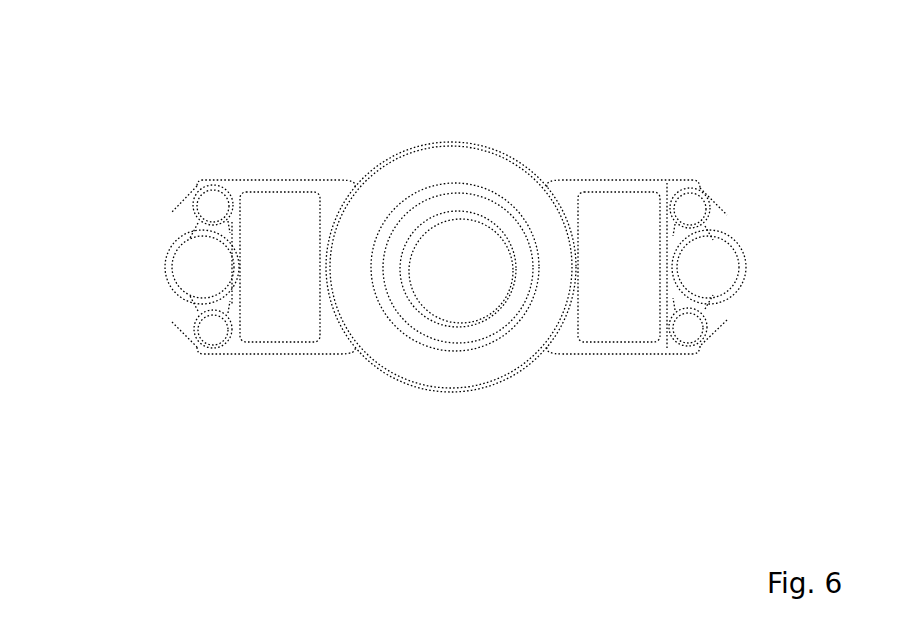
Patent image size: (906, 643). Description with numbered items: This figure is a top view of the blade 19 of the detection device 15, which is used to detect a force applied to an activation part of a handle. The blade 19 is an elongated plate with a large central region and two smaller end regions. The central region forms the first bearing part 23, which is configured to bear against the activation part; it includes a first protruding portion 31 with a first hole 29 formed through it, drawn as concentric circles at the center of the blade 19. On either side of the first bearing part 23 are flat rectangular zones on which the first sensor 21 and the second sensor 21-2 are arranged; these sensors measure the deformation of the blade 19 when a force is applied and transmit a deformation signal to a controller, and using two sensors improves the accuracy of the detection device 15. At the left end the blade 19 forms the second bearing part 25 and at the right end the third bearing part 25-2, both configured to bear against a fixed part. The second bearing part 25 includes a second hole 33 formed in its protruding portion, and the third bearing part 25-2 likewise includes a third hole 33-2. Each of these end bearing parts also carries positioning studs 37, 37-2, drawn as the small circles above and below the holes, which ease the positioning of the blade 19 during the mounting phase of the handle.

The detection device 15 is at (545, 400).
The blade 19 is at (210, 172).
The first sensor 21 is at (276, 240).
The second sensor 21-2 is at (631, 237).
The first bearing part 23 is at (398, 132).
The second bearing part 25 is at (145, 262).
The third bearing part 25-2 is at (760, 250).
The first hole 29 is at (466, 258).
The first protruding portion 31 is at (417, 316).
The second hole 33 is at (190, 262).
The third hole 33-2 is at (707, 260).
The positioning stud 37 is at (210, 335).
The positioning stud 37-2 is at (686, 338).